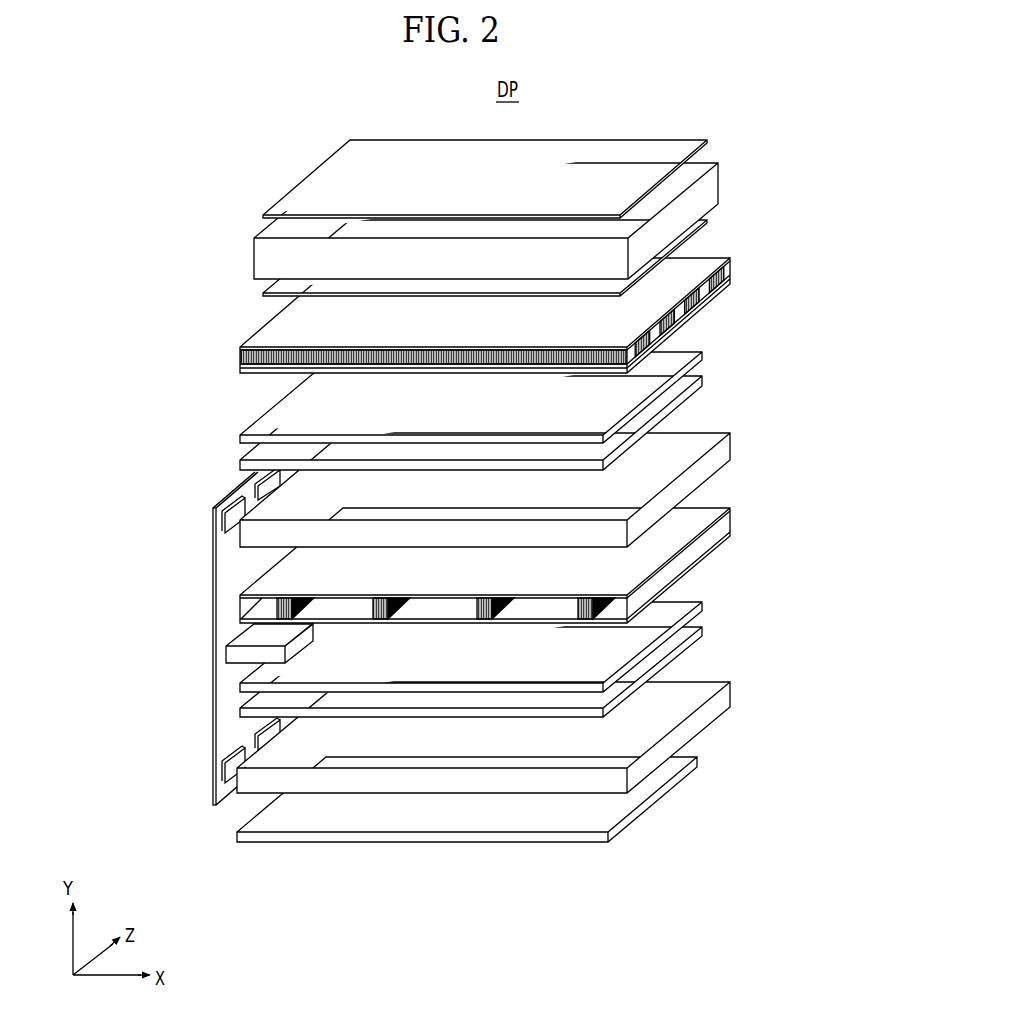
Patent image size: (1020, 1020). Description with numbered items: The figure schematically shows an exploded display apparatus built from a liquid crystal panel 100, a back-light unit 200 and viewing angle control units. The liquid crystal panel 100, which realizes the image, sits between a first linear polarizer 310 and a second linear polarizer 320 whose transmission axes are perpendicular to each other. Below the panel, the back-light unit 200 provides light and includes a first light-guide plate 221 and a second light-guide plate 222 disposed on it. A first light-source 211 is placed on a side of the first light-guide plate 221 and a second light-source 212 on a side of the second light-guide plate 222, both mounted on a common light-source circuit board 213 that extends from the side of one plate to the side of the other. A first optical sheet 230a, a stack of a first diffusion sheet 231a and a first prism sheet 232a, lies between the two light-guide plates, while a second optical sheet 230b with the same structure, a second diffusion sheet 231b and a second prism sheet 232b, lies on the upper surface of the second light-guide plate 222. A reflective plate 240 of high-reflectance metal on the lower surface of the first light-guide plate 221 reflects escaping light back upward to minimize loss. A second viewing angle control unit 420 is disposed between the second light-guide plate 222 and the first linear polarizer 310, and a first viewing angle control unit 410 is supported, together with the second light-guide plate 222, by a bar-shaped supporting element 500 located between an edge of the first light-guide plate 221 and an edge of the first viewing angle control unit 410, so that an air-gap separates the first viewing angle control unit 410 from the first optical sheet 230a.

The liquid crystal panel 100 is at (730, 178).
The back-light unit 200 is at (132, 447).
The first light-source 211 is at (218, 773).
The second light-source 212 is at (218, 527).
The light-source circuit board 213 is at (213, 612).
The first light-guide plate 221 is at (255, 783).
The second light-guide plate 222 is at (257, 537).
The first optical sheet 230a is at (496, 654).
The second optical sheet 230b is at (497, 406).
The first diffusion sheet 231a is at (703, 630).
The first prism sheet 232a is at (703, 604).
The second diffusion sheet 231b is at (703, 380).
The second prism sheet 232b is at (703, 353).
The reflective plate 240 is at (237, 840).
The first linear polarizer 310 is at (250, 298).
The second linear polarizer 320 is at (250, 213).
The first viewing angle control unit 410 is at (744, 518).
The second viewing angle control unit 420 is at (744, 271).
The supporting element 500 is at (310, 650).